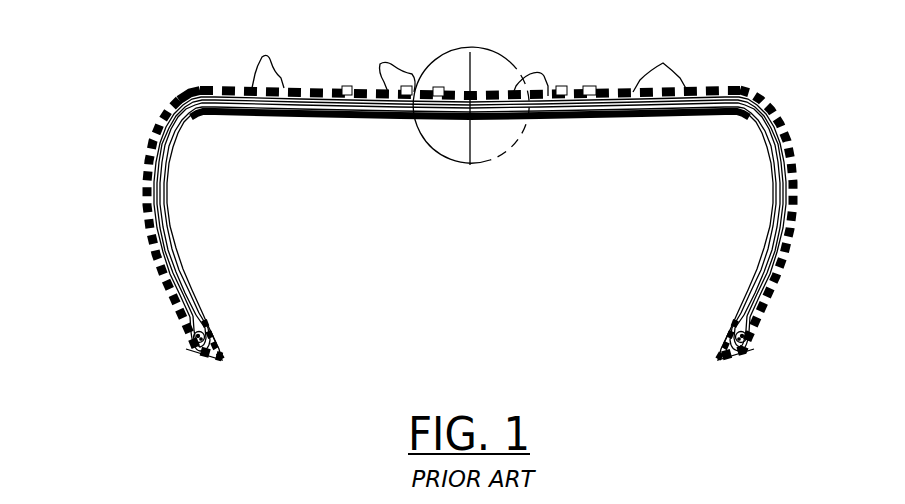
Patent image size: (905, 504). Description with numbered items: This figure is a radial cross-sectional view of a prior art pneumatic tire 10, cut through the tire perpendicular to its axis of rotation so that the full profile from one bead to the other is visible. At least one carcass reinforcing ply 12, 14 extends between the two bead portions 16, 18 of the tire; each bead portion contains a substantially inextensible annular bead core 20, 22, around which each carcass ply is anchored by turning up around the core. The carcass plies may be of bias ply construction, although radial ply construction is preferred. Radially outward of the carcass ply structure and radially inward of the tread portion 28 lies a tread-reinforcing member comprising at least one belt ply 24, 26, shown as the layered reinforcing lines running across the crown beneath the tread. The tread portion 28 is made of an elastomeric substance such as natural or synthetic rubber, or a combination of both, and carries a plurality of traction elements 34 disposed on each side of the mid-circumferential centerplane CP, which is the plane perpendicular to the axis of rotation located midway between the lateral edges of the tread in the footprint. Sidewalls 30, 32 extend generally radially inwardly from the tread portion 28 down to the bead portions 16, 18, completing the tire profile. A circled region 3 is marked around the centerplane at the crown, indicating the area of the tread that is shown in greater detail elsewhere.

The enlarged detail area 3 is at (425, 143).
The tire 10 is at (757, 80).
The carcass reinforcing ply 12 is at (785, 228).
The carcass reinforcing ply 14 is at (775, 253).
The bead portion 16 is at (220, 342).
The bead portion 18 is at (725, 331).
The annular bead core 20 is at (196, 350).
The annular bead core 22 is at (720, 350).
The belt ply 24 is at (563, 108).
The belt ply 26 is at (605, 108).
The tread portion 28 is at (222, 81).
The sidewall 30 is at (152, 240).
The sidewall 32 is at (773, 275).
The traction elements 34 is at (548, 68).
The mid-circumferential centerplane CP is at (482, 83).